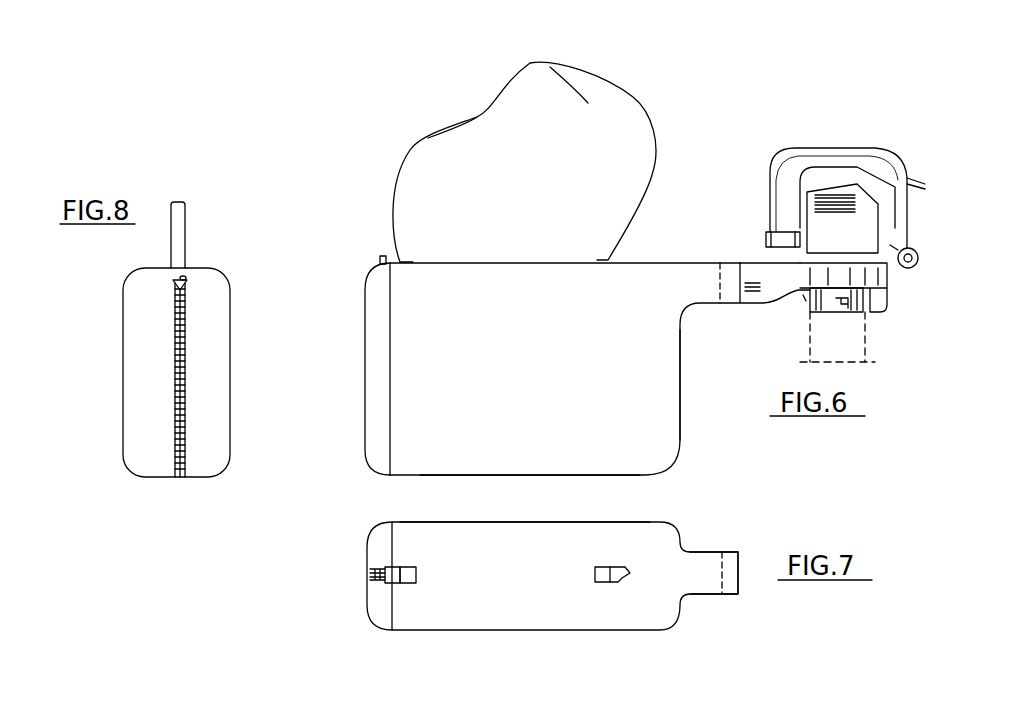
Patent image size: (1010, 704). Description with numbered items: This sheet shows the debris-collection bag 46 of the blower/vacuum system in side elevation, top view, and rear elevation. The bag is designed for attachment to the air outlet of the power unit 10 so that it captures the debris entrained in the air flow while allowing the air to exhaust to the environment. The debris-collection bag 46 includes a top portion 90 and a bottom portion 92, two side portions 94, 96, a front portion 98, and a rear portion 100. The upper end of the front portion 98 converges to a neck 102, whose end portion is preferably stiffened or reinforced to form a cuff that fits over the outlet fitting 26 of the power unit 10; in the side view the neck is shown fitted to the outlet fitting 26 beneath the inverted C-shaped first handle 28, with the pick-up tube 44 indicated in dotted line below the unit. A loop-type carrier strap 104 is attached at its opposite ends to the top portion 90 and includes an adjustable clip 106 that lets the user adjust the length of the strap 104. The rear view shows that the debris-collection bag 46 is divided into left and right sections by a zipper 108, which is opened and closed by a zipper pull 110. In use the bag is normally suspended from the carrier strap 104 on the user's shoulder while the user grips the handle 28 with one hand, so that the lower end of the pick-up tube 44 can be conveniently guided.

In FIG. 6, the power unit 10 is at (816, 188).
In FIG. 6, the outlet fitting 26 is at (730, 292).
In FIG. 6, the first handle 28 is at (778, 176).
In FIG. 6, the pick-up tube 44 is at (865, 338).
In FIG. 8, the debris-collection bag 46 is at (167, 377).
In FIG. 6, the debris-collection bag 46 is at (625, 273).
In FIG. 6, the top portion 90 is at (500, 262).
In FIG. 6, the bottom portion 92 is at (555, 476).
In FIG. 6, the side portion 94 is at (538, 388).
In FIG. 7, the side portion 94 is at (480, 632).
In FIG. 7, the side portion 96 is at (470, 522).
In FIG. 6, the front portion 98 is at (680, 425).
In FIG. 8, the rear portion 100 is at (135, 378).
In FIG. 6, the rear portion 100 is at (365, 393).
In FIG. 7, the rear portion 100 is at (367, 547).
In FIG. 6, the neck 102 is at (728, 262).
In FIG. 7, the neck 102 is at (706, 549).
In FIG. 8, the carrier strap 104 is at (181, 217).
In FIG. 6, the carrier strap 104 is at (428, 138).
In FIG. 6, the adjustable clip 106 is at (530, 63).
In FIG. 8, the zipper 108 is at (182, 478).
In FIG. 7, the zipper 108 is at (368, 575).
In FIG. 8, the zipper pull 110 is at (186, 277).
In FIG. 6, the zipper pull 110 is at (380, 261).